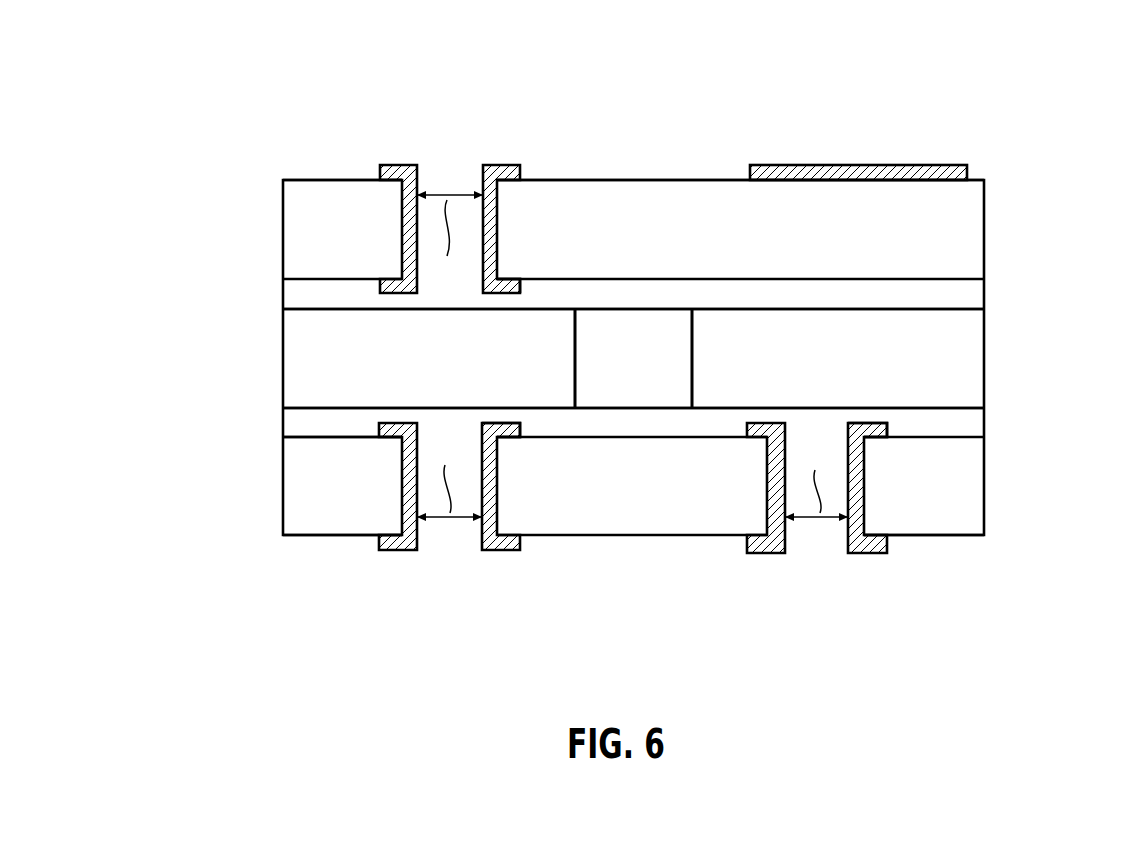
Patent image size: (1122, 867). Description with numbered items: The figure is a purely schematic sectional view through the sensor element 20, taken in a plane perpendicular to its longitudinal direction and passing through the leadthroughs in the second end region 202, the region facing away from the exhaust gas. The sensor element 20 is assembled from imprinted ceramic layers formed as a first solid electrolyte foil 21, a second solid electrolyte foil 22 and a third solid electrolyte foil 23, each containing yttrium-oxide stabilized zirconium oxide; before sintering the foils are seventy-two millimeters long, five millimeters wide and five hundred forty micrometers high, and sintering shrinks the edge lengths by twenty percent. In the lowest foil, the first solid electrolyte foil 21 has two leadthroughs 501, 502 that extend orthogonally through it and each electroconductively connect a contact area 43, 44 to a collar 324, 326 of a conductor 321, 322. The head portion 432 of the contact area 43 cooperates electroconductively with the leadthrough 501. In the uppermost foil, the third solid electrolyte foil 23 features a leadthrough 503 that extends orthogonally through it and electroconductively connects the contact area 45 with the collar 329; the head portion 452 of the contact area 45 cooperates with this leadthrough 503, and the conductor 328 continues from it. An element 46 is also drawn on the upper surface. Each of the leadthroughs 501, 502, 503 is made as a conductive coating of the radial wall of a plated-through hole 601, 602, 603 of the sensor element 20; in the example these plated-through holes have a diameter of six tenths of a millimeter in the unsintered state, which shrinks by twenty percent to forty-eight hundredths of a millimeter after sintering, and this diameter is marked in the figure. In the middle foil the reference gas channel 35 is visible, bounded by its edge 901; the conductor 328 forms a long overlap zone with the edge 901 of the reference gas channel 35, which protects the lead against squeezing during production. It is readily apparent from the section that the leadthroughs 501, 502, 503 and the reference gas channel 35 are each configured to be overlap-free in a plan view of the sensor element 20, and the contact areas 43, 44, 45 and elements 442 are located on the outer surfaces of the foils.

The sensor element 20 is at (536, 357).
The second end region 202 is at (258, 317).
The first solid electrolyte foil 21 is at (970, 497).
The second solid electrolyte foil 22 is at (972, 350).
The third solid electrolyte foil 23 is at (972, 225).
The reference gas channel 35 is at (663, 372).
The edge of reference gas channel 901 is at (578, 366).
The contact pad 46 is at (858, 165).
The contact area 45 is at (522, 190).
The head portion 452 is at (509, 165).
The contact area 44 is at (522, 528).
The lower left via metallization 442 is at (508, 553).
The contact area 43 is at (934, 522).
The head portion 432 is at (860, 553).
The conductor 328 is at (581, 254).
The collar 329 is at (503, 278).
The conductor 321 is at (573, 463).
The collar 324 is at (507, 437).
The conductor 322 is at (985, 422).
The collar 326 is at (880, 430).
The leadthrough 503 is at (445, 159).
The plated-through hole 603 is at (445, 150).
The leadthrough 501 is at (449, 556).
The plated-through hole 601 is at (439, 565).
The leadthrough 502 is at (817, 560).
The plated-through hole 602 is at (814, 567).